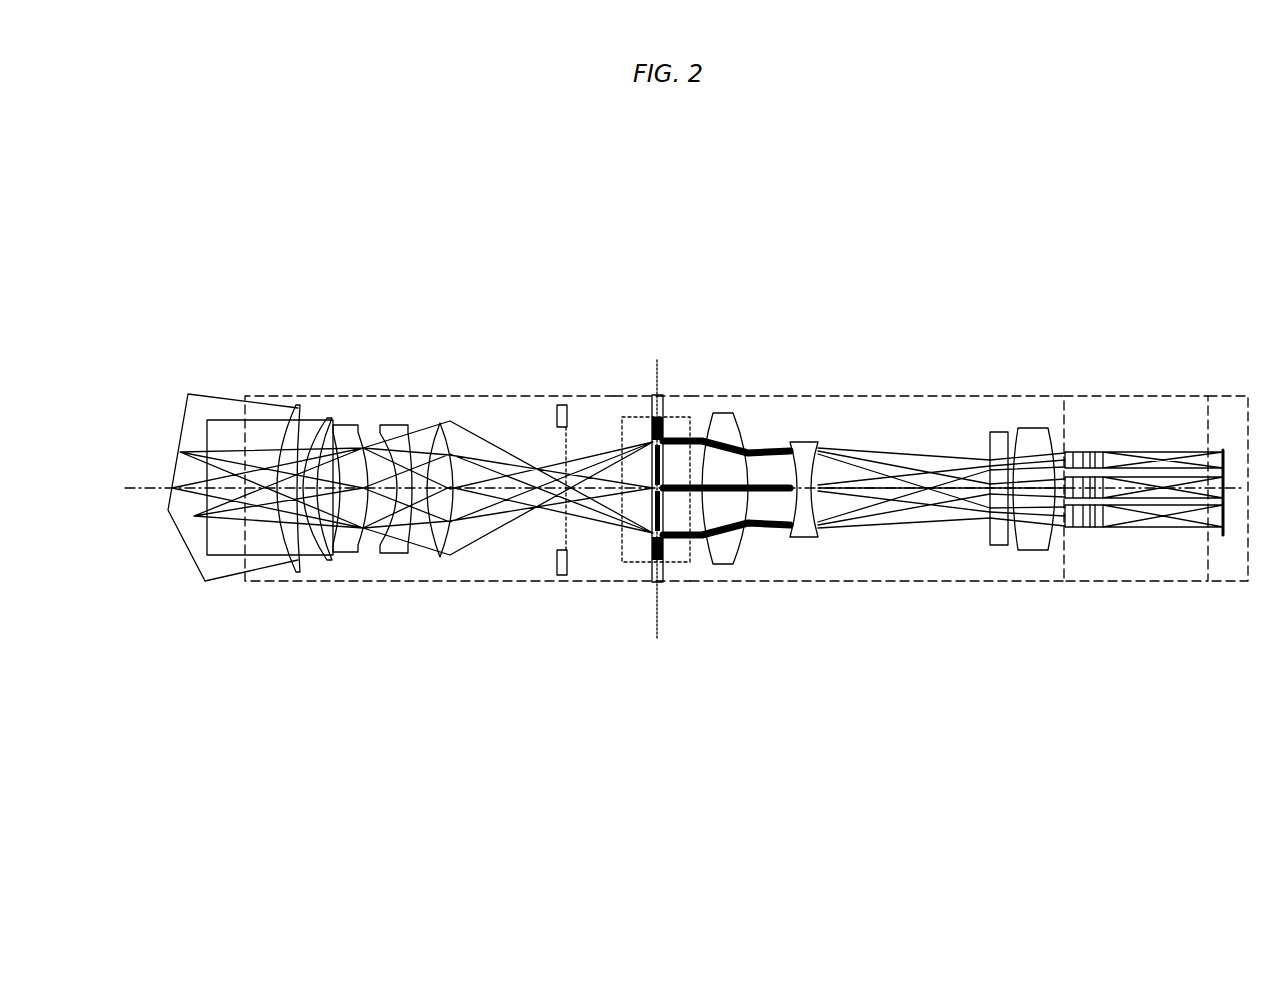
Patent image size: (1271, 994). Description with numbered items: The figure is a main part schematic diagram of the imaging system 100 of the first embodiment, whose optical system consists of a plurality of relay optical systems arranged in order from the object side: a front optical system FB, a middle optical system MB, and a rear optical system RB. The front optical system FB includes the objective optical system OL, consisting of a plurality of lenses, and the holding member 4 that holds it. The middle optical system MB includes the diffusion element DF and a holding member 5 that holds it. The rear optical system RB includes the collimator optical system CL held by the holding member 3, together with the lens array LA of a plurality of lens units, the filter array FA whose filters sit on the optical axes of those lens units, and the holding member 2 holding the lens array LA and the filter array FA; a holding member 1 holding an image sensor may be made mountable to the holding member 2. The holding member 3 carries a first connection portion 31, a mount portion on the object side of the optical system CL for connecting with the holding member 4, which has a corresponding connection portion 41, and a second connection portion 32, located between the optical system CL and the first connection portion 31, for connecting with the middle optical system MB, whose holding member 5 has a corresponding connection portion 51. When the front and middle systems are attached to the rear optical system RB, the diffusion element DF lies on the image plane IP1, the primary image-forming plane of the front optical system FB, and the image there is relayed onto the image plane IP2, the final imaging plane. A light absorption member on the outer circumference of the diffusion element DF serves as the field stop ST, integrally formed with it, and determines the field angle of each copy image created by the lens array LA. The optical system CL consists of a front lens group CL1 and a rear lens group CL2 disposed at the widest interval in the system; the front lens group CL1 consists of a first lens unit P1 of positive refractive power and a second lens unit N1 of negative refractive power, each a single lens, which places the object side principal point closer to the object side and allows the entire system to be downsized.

The imaging system 100 is at (746, 609).
The holding member 1 is at (1223, 585).
The holding member 2 is at (1140, 585).
The holding member 3 is at (928, 585).
The holding member 4 is at (470, 585).
The holding member 5 is at (623, 583).
The connection portion 41 is at (551, 535).
The first connection portion 31 is at (550, 584).
The connection portion 51 is at (622, 545).
The second connection portion 32 is at (652, 584).
The front optical system FB is at (256, 208).
The middle optical system MB is at (614, 208).
The rear optical system RB is at (690, 208).
The objective optical system OL is at (462, 377).
The optical system CL is at (697, 258).
The front lens group CL1 is at (697, 307).
The rear lens group CL2 is at (1062, 392).
The first lens unit P1 is at (698, 379).
The second lens unit N1 is at (828, 379).
The filter array FA is at (1084, 380).
The lens array LA is at (1088, 380).
The image plane IP1 is at (656, 374).
The image plane IP2 is at (1223, 452).
The diffusion element DF is at (650, 462).
The field stop ST is at (665, 552).